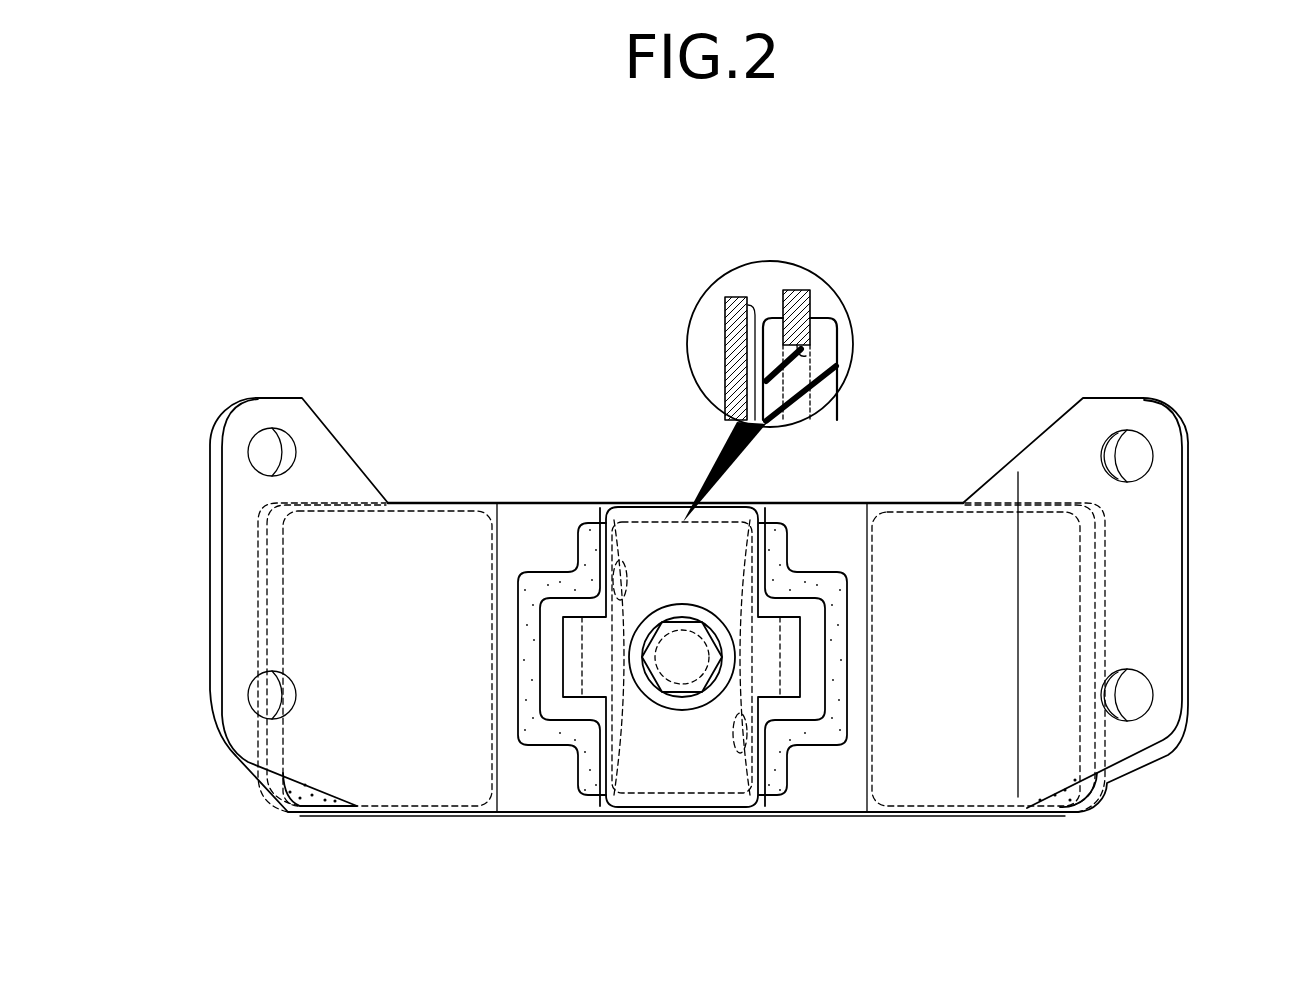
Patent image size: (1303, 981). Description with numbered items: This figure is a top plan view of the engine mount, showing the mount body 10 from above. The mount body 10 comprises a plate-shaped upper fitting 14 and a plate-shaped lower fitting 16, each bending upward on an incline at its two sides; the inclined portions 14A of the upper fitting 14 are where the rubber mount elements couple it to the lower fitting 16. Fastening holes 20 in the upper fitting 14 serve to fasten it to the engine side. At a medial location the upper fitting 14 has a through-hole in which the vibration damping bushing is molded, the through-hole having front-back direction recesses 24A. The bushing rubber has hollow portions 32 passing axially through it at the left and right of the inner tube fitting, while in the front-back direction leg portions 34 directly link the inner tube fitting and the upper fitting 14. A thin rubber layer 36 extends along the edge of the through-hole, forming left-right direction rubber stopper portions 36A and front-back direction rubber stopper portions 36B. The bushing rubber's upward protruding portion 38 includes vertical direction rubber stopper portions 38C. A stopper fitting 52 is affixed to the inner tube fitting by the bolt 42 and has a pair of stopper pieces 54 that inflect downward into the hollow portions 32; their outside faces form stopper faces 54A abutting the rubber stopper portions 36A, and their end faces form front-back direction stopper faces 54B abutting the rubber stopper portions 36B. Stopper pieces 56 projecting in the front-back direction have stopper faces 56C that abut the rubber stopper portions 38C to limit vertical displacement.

The mount body 10 is at (440, 346).
The upper fitting 14 is at (365, 458).
The inclined portions of the upper fitting 14A is at (313, 770).
The lower fitting 16 is at (1110, 798).
The fastening holes 20 is at (262, 452).
The front-back direction recesses 24A is at (812, 352).
The hollow portions 32 is at (612, 520).
The leg portions 34 is at (672, 770).
The rubber layer 36 is at (837, 690).
The left-right direction rubber stopper portions 36A is at (545, 650).
The front-back direction rubber stopper portions 36B is at (562, 600).
The protruding portion 38 is at (683, 659).
The vertical direction rubber stopper portions 38C is at (636, 540).
The bolt 42 is at (684, 645).
The stopper fitting 52 is at (760, 496).
The stopper pieces 54 is at (573, 670).
The stopper faces 54A is at (560, 630).
The front-back direction stopper faces 54B is at (565, 585).
The stopper pieces 56 is at (670, 542).
The stopper faces 56C is at (755, 310).